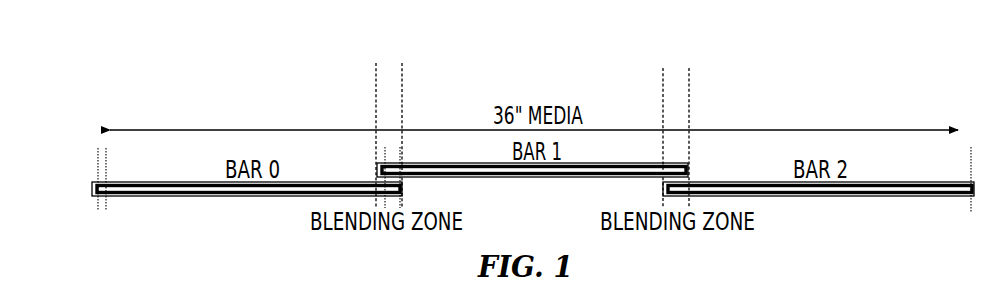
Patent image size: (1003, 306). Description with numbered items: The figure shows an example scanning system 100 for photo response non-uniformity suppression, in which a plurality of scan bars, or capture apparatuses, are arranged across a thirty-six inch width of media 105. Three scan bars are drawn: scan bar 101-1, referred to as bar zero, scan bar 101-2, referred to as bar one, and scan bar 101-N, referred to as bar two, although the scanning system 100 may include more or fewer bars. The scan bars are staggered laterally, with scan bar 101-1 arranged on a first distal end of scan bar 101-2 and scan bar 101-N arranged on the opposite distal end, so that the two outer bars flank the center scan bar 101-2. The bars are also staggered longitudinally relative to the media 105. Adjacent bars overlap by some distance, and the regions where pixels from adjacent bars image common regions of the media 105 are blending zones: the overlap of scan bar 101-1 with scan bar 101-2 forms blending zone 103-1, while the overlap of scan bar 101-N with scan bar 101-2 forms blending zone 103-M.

The scanning system 100 is at (139, 63).
The media 105 is at (250, 129).
The blending zone 103-1 is at (391, 66).
The blending zone 103-M is at (674, 66).
The scan bar 101-1 is at (181, 195).
The scan bar 101-2 is at (556, 178).
The scan bar 101-N is at (878, 197).